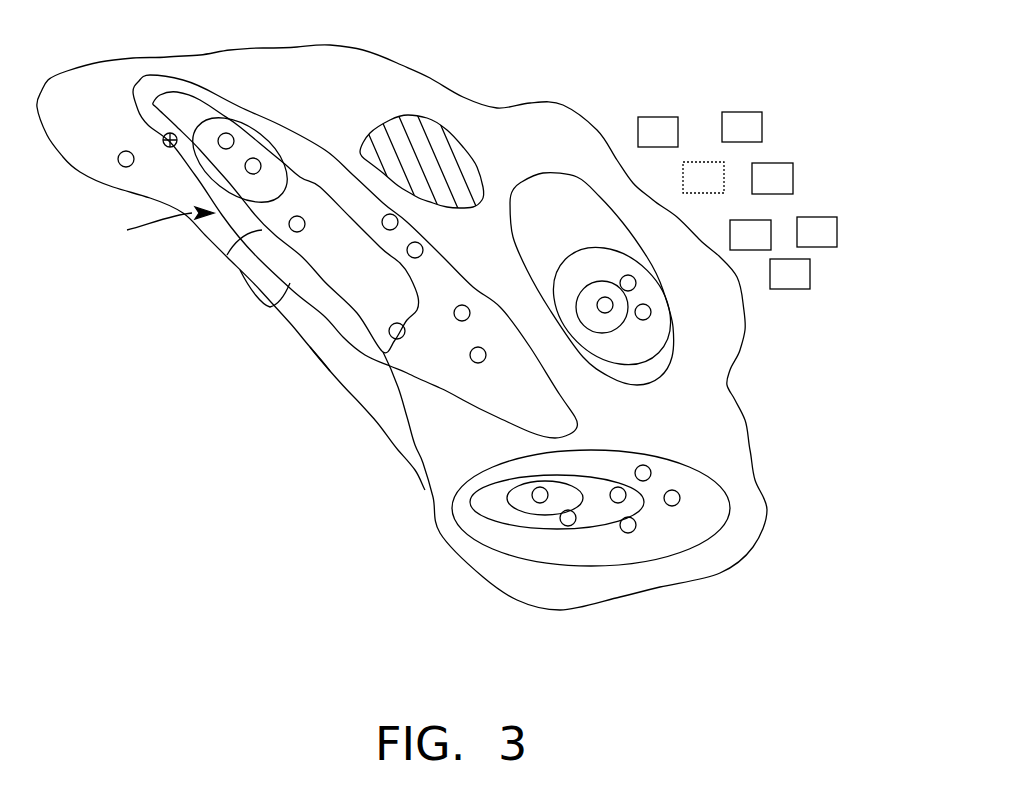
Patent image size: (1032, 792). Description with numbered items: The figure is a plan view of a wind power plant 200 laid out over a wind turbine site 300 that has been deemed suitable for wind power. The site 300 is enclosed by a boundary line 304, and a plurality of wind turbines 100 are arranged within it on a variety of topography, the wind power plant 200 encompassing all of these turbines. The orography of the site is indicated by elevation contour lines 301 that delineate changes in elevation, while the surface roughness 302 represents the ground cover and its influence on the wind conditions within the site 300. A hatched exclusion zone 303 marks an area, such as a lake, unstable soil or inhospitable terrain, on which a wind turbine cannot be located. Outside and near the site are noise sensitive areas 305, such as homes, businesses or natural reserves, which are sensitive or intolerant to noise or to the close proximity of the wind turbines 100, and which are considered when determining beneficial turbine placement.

The wind turbine 100 is at (224, 133).
The wind power plant 200 is at (148, 225).
The wind turbine site 300 is at (663, 413).
The elevation contour lines 301 is at (603, 250).
The surface roughness 302 is at (235, 250).
The exclusion zone 303 is at (425, 130).
The boundary line 304 is at (757, 548).
The noise sensitive areas 305 is at (830, 290).